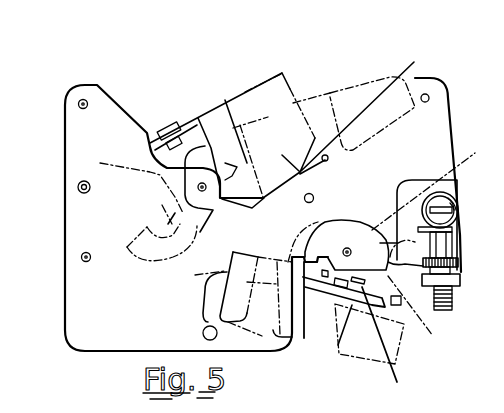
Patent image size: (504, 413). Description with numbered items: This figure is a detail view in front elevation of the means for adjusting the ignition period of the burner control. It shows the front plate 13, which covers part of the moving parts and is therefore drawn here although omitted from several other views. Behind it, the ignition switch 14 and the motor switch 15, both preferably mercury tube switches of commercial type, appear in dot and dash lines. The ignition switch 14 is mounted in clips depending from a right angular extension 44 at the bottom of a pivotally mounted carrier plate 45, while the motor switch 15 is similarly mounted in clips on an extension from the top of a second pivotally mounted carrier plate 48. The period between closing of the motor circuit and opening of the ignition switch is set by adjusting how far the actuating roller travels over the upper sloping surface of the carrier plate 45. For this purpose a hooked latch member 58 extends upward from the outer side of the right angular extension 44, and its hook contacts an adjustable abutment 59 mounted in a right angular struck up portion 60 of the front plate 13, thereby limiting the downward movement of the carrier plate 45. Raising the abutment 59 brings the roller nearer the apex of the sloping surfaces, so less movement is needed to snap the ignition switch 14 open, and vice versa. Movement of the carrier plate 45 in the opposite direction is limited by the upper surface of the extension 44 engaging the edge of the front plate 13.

The front plate 13 is at (103, 130).
The ignition switch 14 is at (316, 316).
The motor switch 15 is at (362, 99).
The right angular extension 44 is at (391, 340).
The carrier plate 45 is at (392, 208).
The carrier plate 48 is at (100, 163).
The hooked latch member 58 is at (423, 308).
The adjustable abutment 59 is at (457, 257).
The right angular struck up portion 60 is at (462, 279).